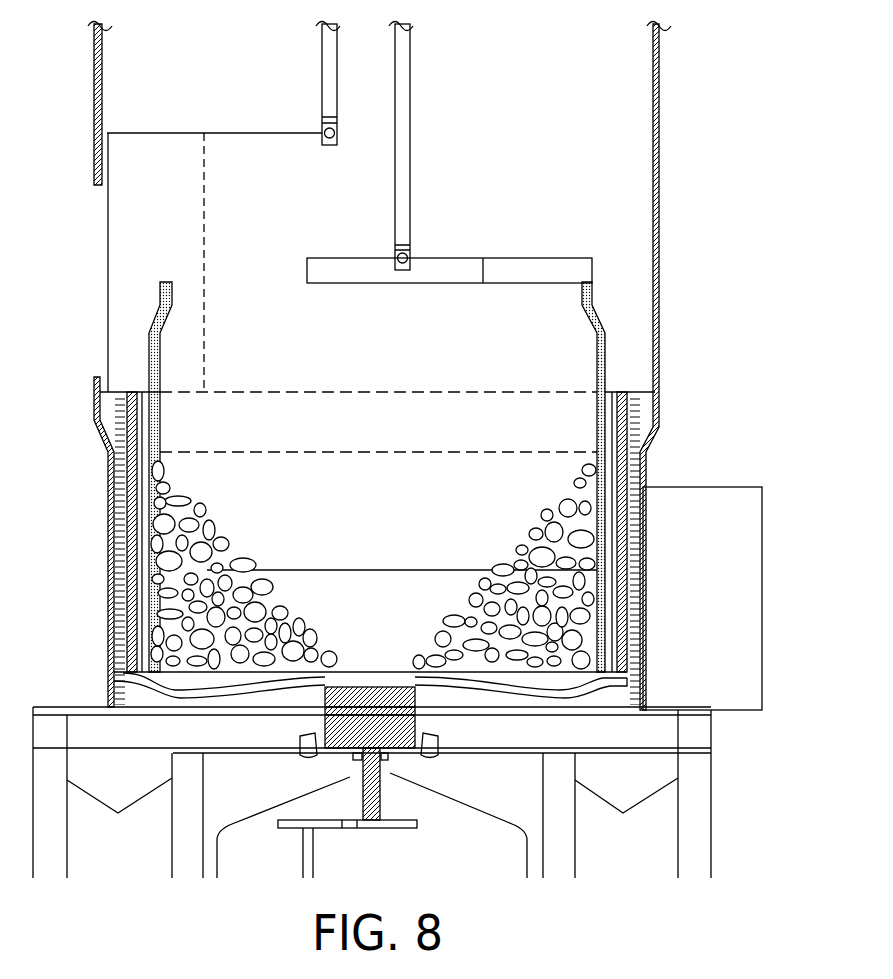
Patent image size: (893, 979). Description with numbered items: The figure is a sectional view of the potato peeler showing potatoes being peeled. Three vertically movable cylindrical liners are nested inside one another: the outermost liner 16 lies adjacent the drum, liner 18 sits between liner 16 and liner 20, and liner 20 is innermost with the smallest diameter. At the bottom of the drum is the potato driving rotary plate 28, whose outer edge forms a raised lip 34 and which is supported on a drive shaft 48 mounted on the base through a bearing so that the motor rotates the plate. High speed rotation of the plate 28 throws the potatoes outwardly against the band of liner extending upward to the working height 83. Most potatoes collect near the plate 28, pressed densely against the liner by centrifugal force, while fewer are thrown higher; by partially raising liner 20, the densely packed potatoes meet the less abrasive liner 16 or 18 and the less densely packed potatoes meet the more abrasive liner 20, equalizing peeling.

The outermost liner 16 is at (110, 390).
The liner 18 is at (132, 390).
The liner 20 is at (177, 281).
The potato driving rotary plate 28 is at (362, 672).
The raised lip 34 is at (108, 685).
The drive shaft 48 is at (380, 810).
The working height 83 is at (326, 452).